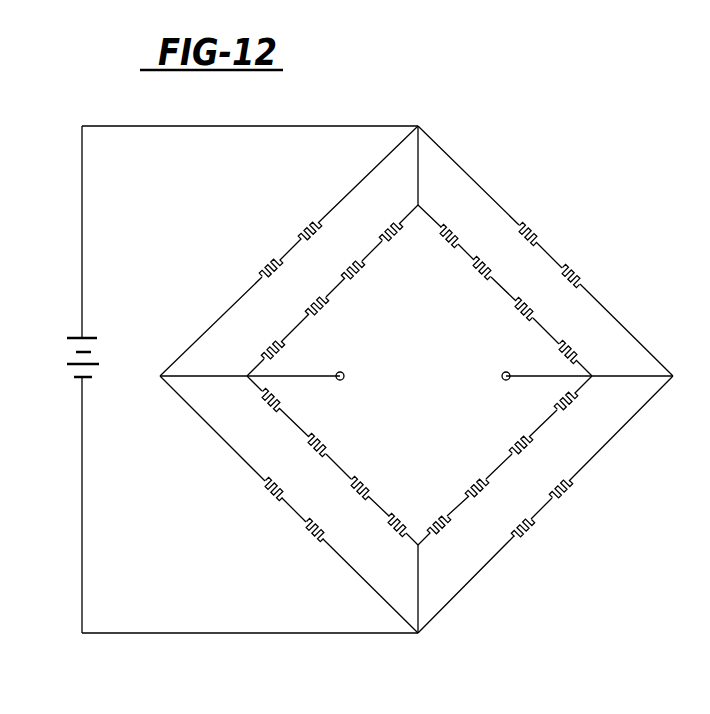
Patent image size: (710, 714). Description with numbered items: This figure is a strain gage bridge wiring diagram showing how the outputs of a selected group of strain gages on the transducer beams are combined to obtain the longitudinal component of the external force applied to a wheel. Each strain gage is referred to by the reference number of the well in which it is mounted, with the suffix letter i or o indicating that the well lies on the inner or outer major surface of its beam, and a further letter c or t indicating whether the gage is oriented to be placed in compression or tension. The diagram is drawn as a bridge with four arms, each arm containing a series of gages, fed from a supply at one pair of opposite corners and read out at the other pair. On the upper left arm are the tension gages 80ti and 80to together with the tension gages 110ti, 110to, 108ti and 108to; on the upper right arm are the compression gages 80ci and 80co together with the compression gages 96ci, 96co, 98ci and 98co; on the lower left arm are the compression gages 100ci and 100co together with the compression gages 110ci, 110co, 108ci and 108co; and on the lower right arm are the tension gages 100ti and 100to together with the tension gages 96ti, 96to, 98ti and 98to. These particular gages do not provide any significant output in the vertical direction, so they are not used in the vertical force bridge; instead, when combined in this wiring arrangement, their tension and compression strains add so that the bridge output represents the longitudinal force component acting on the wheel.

The strain gage in well 80ti is at (303, 226).
The strain gage in well 80to is at (264, 270).
The strain gage in well 80ci is at (538, 232).
The strain gage in well 80co is at (578, 278).
The strain gage in well 96ti is at (570, 405).
The strain gage in well 96to is at (556, 455).
The strain gage in well 96ci is at (482, 208).
The strain gage in well 96co is at (520, 252).
The strain gage in well 98ti is at (520, 510).
The strain gage in well 98to is at (444, 527).
The strain gage in well 98ci is at (548, 302).
The strain gage in well 98co is at (600, 335).
The strain gage in well 100ti is at (566, 492).
The strain gage in well 100to is at (527, 532).
The strain gage in well 100ci is at (268, 490).
The strain gage in well 100co is at (312, 532).
The strain gage in well 108ti is at (316, 300).
The strain gage in well 108to is at (262, 350).
The strain gage in well 108ci is at (355, 494).
The strain gage in well 108co is at (390, 530).
The strain gage in well 110ti is at (385, 226).
The strain gage in well 110to is at (355, 274).
The strain gage in well 110ci is at (268, 400).
The strain gage in well 110co is at (313, 447).